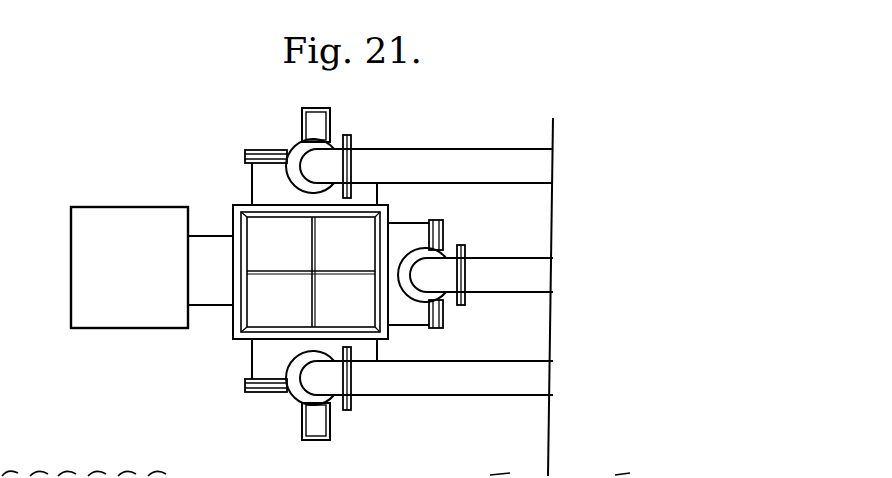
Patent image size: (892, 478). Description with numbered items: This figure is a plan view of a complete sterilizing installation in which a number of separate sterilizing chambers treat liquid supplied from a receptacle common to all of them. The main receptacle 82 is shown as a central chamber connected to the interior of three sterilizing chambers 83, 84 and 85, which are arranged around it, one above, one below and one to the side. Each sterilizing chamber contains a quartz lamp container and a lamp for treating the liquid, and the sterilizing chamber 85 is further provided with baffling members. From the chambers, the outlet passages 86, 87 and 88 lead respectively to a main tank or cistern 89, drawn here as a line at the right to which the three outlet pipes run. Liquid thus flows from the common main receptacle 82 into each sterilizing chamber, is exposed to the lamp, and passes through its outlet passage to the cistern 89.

The main receptacle 82 is at (363, 231).
The sterilizing chamber 83 is at (264, 173).
The sterilizing chamber 84 is at (262, 376).
The sterilizing chamber 85 is at (410, 233).
The outlet passage 86 is at (435, 166).
The outlet passage 87 is at (435, 378).
The outlet passage 88 is at (490, 275).
The main tank or cistern 89 is at (567, 297).